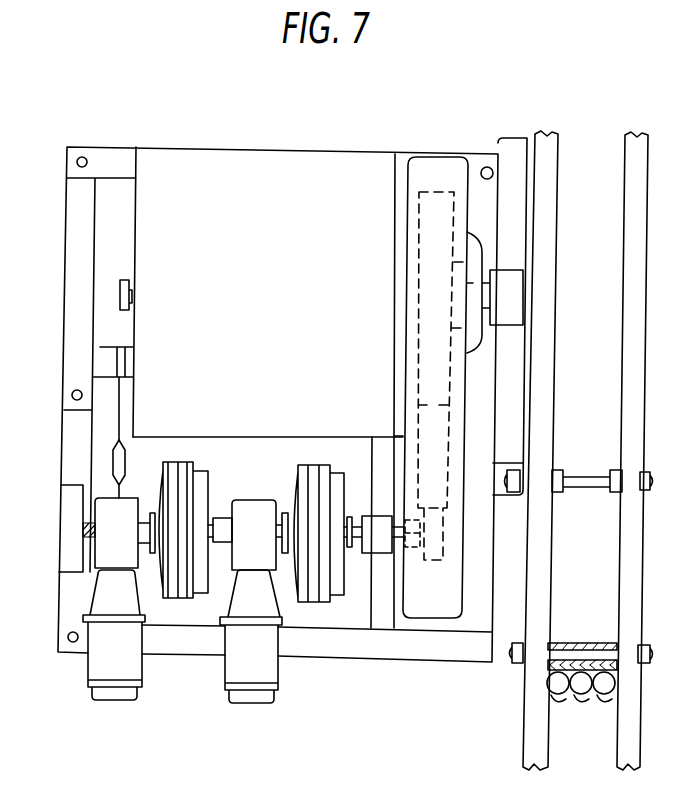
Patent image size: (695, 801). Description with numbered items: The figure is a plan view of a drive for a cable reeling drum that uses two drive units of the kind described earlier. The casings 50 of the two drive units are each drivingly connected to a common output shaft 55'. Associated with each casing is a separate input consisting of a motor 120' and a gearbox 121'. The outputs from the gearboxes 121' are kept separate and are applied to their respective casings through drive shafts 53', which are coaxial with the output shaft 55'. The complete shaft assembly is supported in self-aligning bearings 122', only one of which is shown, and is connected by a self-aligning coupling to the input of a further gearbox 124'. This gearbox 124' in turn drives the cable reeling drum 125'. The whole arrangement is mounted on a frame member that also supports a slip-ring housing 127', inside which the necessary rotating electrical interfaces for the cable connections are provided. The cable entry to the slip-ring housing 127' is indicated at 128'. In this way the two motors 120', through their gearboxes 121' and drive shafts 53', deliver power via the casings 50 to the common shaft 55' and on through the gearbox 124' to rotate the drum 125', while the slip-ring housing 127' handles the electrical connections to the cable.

The motor 120' is at (182, 659).
The gearbox 121' is at (150, 522).
The self-aligning bearings 122' is at (48, 517).
The gearbox 124' is at (427, 387).
The cable reeling drum 125' is at (579, 450).
The slip-ring housing 127' is at (268, 391).
The cable entry 128' is at (160, 268).
The casing 50 is at (175, 590).
The drive shafts 53' is at (208, 528).
The common output shaft 55' is at (308, 538).